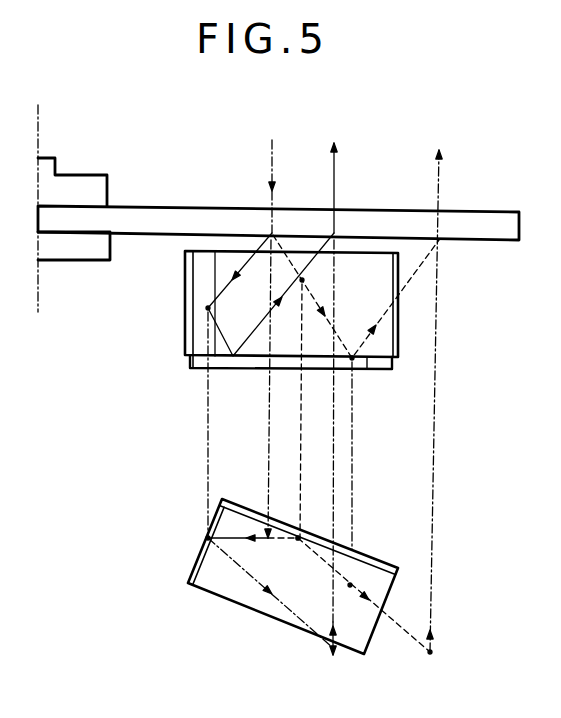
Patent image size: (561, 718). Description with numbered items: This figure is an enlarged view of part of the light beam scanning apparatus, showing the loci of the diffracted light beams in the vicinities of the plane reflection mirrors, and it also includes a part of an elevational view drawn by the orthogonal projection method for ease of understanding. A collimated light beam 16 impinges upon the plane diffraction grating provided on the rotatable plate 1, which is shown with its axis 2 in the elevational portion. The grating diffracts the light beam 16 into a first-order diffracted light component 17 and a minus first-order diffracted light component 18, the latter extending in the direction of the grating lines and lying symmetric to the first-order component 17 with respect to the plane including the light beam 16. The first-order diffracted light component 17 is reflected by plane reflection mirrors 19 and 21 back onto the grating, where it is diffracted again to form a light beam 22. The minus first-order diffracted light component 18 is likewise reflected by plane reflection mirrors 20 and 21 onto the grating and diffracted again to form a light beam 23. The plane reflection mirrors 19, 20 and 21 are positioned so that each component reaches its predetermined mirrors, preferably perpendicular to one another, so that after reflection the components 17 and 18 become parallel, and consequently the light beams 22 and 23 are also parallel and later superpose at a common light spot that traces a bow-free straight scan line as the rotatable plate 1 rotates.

The rotatable plate 1 is at (146, 207).
The axis of rotation 2 is at (38, 128).
The collimated light beam 16 is at (272, 150).
The first-order diffracted light component 17 is at (247, 260).
The minus first-order diffracted light component 18 is at (289, 262).
The plane reflection mirror 19 is at (187, 301).
The plane reflection mirror 20 is at (400, 318).
The plane reflection mirror 21 is at (375, 371).
The light beam 22 is at (338, 177).
The light beam 23 is at (442, 180).